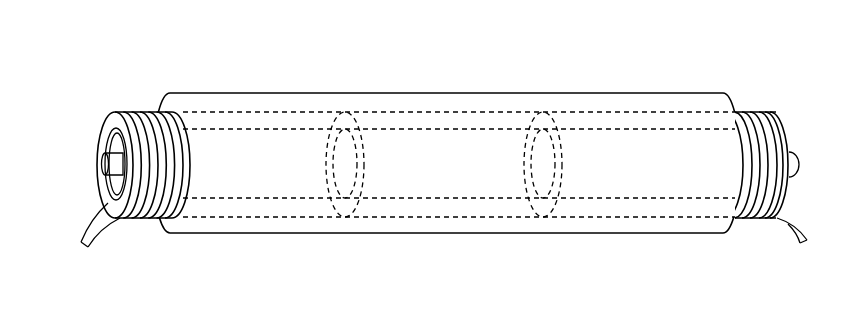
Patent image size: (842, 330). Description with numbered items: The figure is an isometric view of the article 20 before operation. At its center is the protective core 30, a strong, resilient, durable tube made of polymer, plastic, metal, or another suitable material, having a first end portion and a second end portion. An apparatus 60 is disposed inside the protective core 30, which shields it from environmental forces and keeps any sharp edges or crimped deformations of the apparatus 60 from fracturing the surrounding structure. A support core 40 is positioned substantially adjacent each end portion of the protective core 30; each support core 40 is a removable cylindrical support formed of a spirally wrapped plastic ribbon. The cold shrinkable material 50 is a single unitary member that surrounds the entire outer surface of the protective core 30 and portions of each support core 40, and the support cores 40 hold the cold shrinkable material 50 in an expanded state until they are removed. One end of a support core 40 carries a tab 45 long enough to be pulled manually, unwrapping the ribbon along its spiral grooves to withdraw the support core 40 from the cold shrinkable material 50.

The article 20 is at (614, 75).
The protective core 30 is at (433, 118).
The support core 40 is at (140, 112).
The tab 45 is at (93, 223).
The cold shrinkable material 50 is at (298, 102).
The apparatus 60 is at (103, 165).